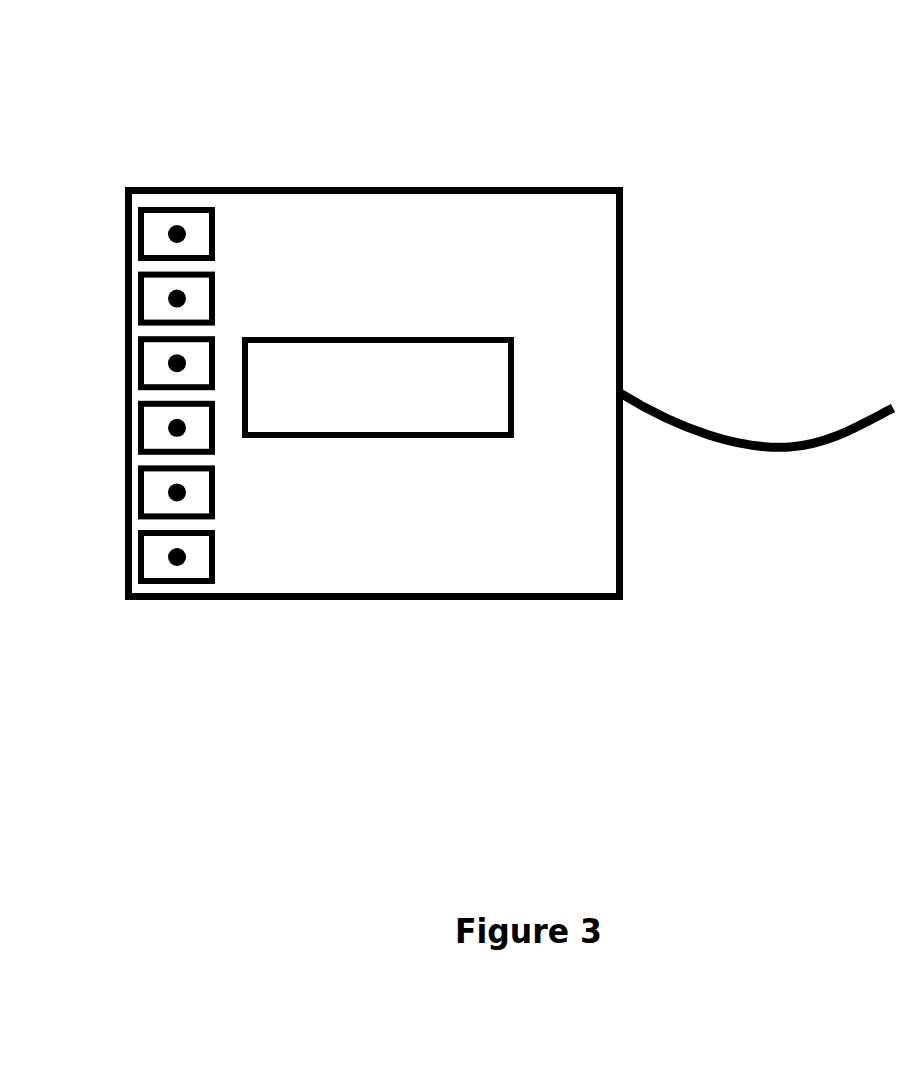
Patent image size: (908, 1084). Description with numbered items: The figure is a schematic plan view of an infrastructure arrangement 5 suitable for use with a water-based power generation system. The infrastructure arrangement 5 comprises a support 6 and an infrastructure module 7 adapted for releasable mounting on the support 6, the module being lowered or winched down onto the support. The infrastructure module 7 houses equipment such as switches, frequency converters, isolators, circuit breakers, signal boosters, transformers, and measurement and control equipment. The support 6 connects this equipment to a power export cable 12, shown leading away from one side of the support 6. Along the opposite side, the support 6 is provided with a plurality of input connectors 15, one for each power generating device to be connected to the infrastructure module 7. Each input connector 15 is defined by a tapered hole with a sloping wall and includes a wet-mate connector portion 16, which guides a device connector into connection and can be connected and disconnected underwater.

The infrastructure arrangement 5 is at (701, 116).
The support 6 is at (598, 582).
The infrastructure module 7 is at (412, 413).
The power export cable 12 is at (790, 452).
The input connector 15 is at (173, 220).
The wet-mate connector portion 16 is at (170, 238).